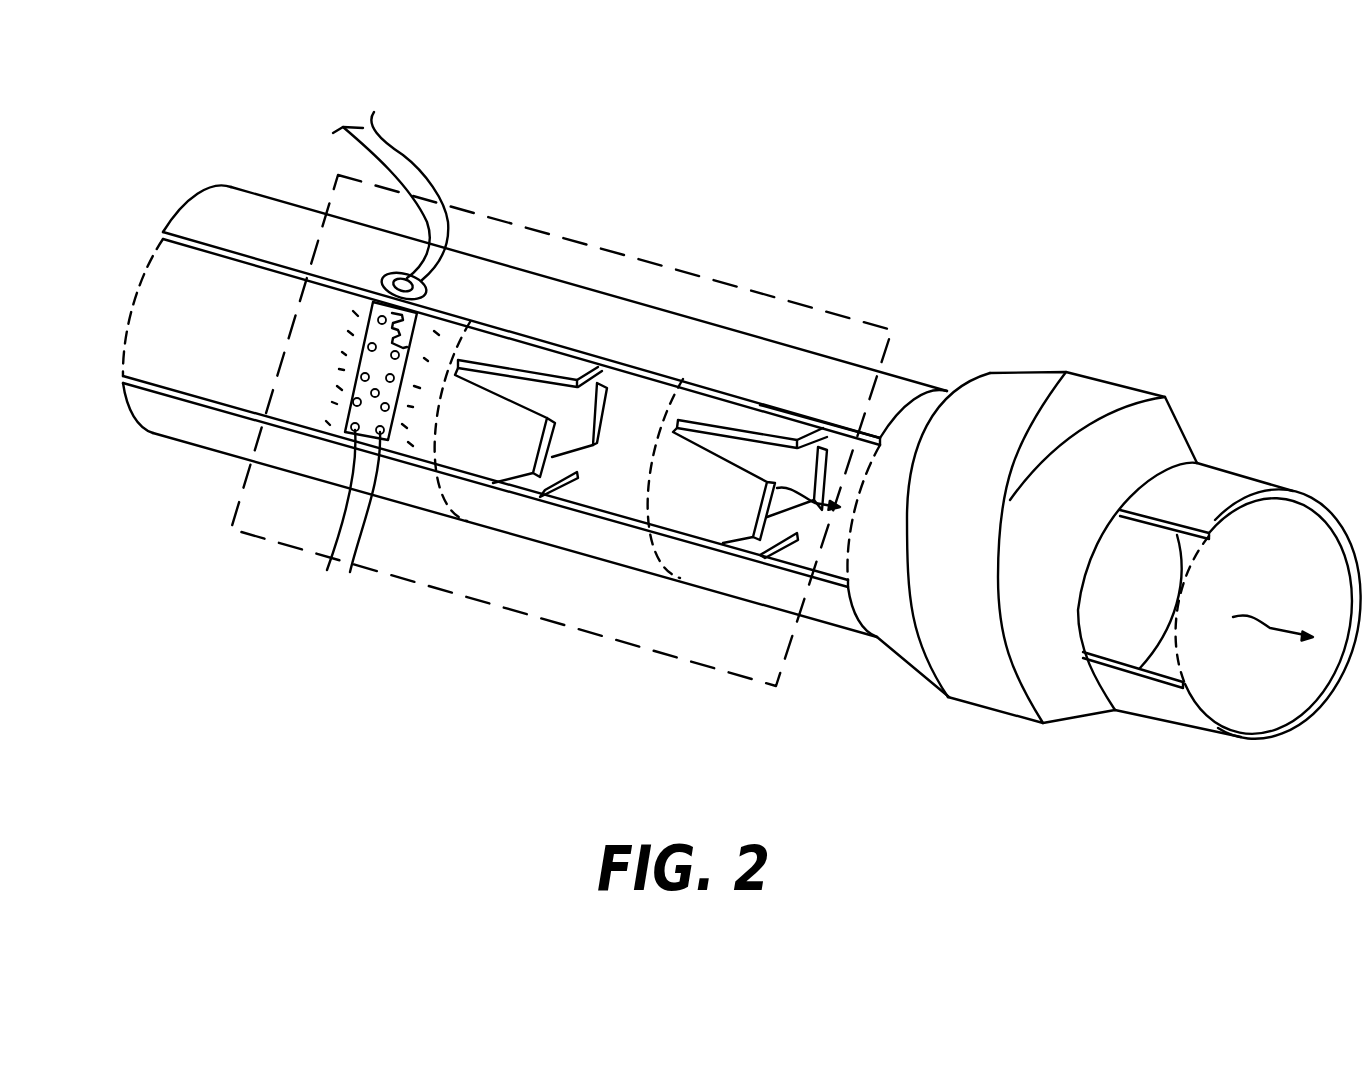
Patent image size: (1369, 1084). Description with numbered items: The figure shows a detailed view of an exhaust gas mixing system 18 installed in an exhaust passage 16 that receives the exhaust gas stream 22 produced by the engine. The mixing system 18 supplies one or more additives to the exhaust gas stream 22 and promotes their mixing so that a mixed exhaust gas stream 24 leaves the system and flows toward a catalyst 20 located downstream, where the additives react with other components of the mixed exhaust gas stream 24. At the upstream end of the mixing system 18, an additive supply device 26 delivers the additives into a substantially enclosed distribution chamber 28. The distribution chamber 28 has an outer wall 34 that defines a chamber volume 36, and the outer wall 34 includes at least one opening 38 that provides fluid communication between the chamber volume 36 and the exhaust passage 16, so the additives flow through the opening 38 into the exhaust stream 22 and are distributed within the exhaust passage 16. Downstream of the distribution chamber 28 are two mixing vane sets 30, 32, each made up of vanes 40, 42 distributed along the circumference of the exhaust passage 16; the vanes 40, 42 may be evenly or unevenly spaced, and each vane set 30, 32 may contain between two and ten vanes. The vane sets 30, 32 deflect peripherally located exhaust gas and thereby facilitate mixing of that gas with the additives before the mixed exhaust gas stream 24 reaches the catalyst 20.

The exhaust passage 16 is at (1237, 481).
The mixing system 18 is at (536, 613).
The catalyst 20 is at (1107, 377).
The exhaust gas stream 22 is at (325, 346).
The mixed exhaust gas stream 24 is at (845, 482).
The additive supply device 26 is at (418, 302).
The distribution chamber 28 is at (325, 404).
The mixing vane set 30 is at (547, 327).
The mixing vane set 32 is at (737, 392).
The outer wall 34 is at (385, 407).
The chamber volume 36 is at (437, 325).
The opening 38 is at (343, 518).
The vanes 40 is at (500, 457).
The vanes 42 is at (740, 423).